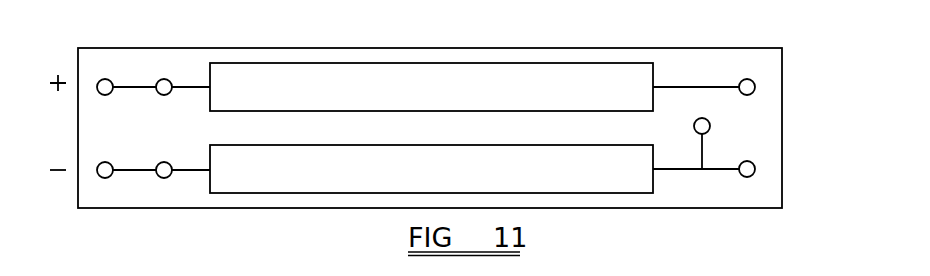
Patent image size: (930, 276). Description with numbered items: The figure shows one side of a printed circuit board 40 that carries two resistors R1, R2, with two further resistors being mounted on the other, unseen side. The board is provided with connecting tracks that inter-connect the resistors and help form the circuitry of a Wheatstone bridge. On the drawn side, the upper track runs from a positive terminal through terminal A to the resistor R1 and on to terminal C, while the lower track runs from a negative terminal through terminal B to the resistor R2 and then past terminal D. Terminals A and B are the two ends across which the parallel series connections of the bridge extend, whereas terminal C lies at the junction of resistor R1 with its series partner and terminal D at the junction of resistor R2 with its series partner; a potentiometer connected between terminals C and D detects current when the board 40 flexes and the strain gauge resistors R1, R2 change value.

The printed circuit board 40 is at (710, 47).
The terminal A is at (164, 75).
The terminal B is at (164, 158).
The terminal C is at (747, 75).
The terminal D is at (690, 143).
The resistor R1 is at (431, 87).
The resistor R2 is at (431, 169).